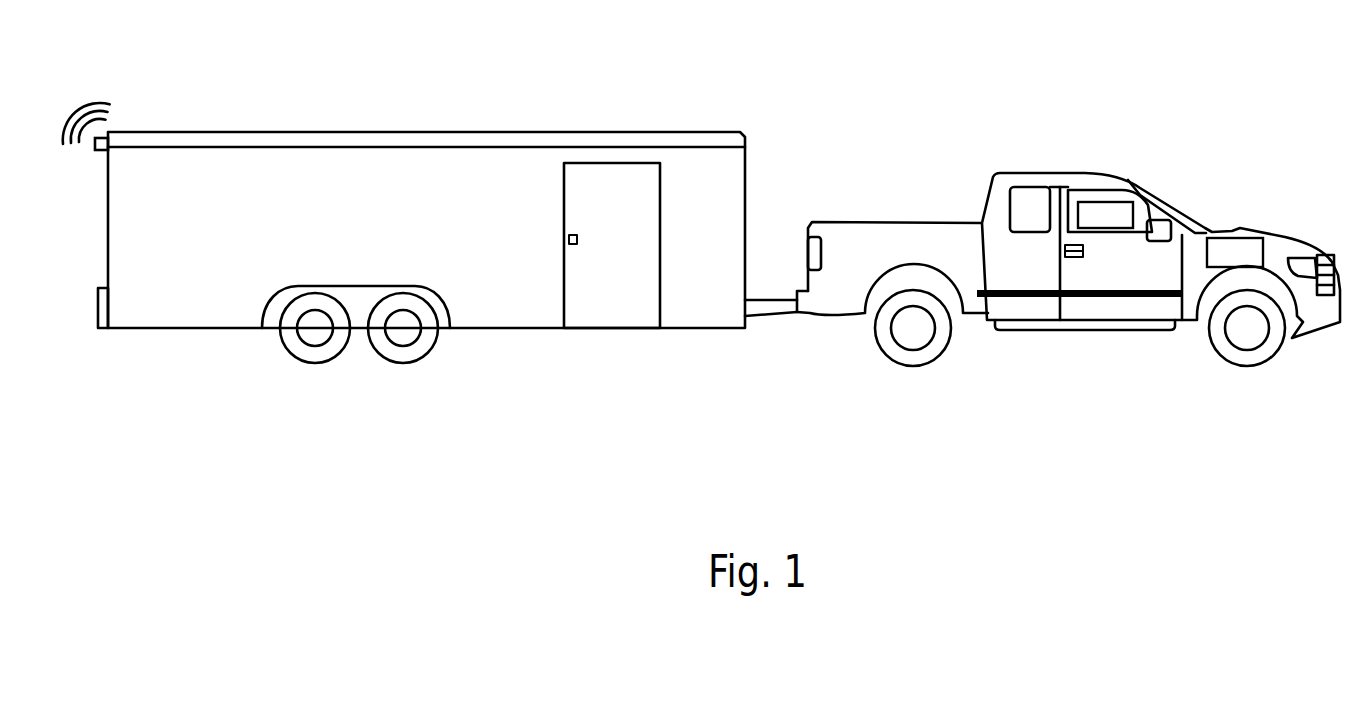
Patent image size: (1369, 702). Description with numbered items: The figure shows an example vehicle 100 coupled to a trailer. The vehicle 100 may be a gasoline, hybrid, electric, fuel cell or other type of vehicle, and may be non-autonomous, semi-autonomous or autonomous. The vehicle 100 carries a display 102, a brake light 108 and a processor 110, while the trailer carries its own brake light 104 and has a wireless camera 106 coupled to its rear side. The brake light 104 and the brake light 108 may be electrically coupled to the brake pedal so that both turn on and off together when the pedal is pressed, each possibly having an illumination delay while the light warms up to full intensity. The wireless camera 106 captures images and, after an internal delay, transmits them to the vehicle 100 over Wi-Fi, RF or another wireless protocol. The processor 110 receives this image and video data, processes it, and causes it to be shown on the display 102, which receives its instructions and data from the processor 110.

The vehicle 100 is at (985, 186).
The display 102 is at (1123, 225).
The brake light 104 is at (100, 329).
The wireless camera 106 is at (107, 132).
The brake light 108 is at (803, 240).
The processor 110 is at (1253, 263).